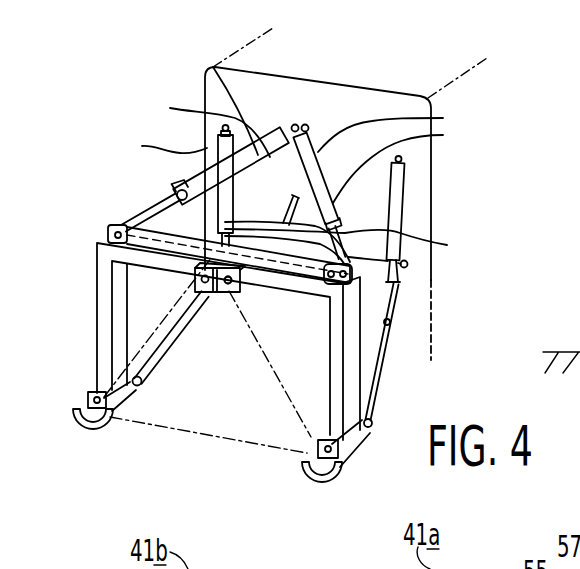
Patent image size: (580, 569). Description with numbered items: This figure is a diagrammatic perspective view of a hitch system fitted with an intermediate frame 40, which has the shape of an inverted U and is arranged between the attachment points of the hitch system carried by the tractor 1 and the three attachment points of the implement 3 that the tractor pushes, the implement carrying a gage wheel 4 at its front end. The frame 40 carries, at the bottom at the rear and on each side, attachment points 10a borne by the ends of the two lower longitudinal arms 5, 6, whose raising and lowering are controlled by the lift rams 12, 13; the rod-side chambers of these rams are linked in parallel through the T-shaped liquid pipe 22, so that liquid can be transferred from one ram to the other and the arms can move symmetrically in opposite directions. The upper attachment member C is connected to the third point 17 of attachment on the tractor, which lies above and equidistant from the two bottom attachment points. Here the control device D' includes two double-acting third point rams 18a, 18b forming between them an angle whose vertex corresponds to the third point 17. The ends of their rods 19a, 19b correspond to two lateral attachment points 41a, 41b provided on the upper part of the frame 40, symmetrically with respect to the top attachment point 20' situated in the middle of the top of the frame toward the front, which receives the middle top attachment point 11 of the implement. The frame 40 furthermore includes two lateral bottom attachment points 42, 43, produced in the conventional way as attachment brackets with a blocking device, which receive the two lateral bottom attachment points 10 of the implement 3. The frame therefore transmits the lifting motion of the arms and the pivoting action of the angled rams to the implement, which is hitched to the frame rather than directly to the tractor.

The tractor 1 is at (476, 82).
The implement 3 is at (214, 436).
The gage wheel 4 is at (579, 316).
The lower longitudinal arm 5 is at (383, 377).
The lower longitudinal arm 6 is at (167, 342).
The lateral bottom attachment point 10 is at (87, 405).
The attachment point 10a is at (201, 413).
The middle top attachment point 11 is at (213, 294).
The lift ram 12 is at (405, 186).
The lift ram 13 is at (207, 144).
The third point of attachment 17 is at (300, 125).
The third point ram 18a is at (333, 203).
The third point ram 18b is at (213, 67).
The piston rod 19a is at (487, 253).
The piston rod 19b is at (143, 213).
The top attachment point 20' is at (261, 309).
The liquid pipe 22 is at (287, 203).
The intermediate frame 40 is at (96, 289).
The lateral attachment point 41a is at (352, 266).
The lateral attachment point 41b is at (107, 230).
The lateral bottom attachment point 42 is at (337, 470).
The lateral bottom attachment point 43 is at (97, 428).
The upper attachment member C is at (151, 183).
The control device D' is at (160, 61).